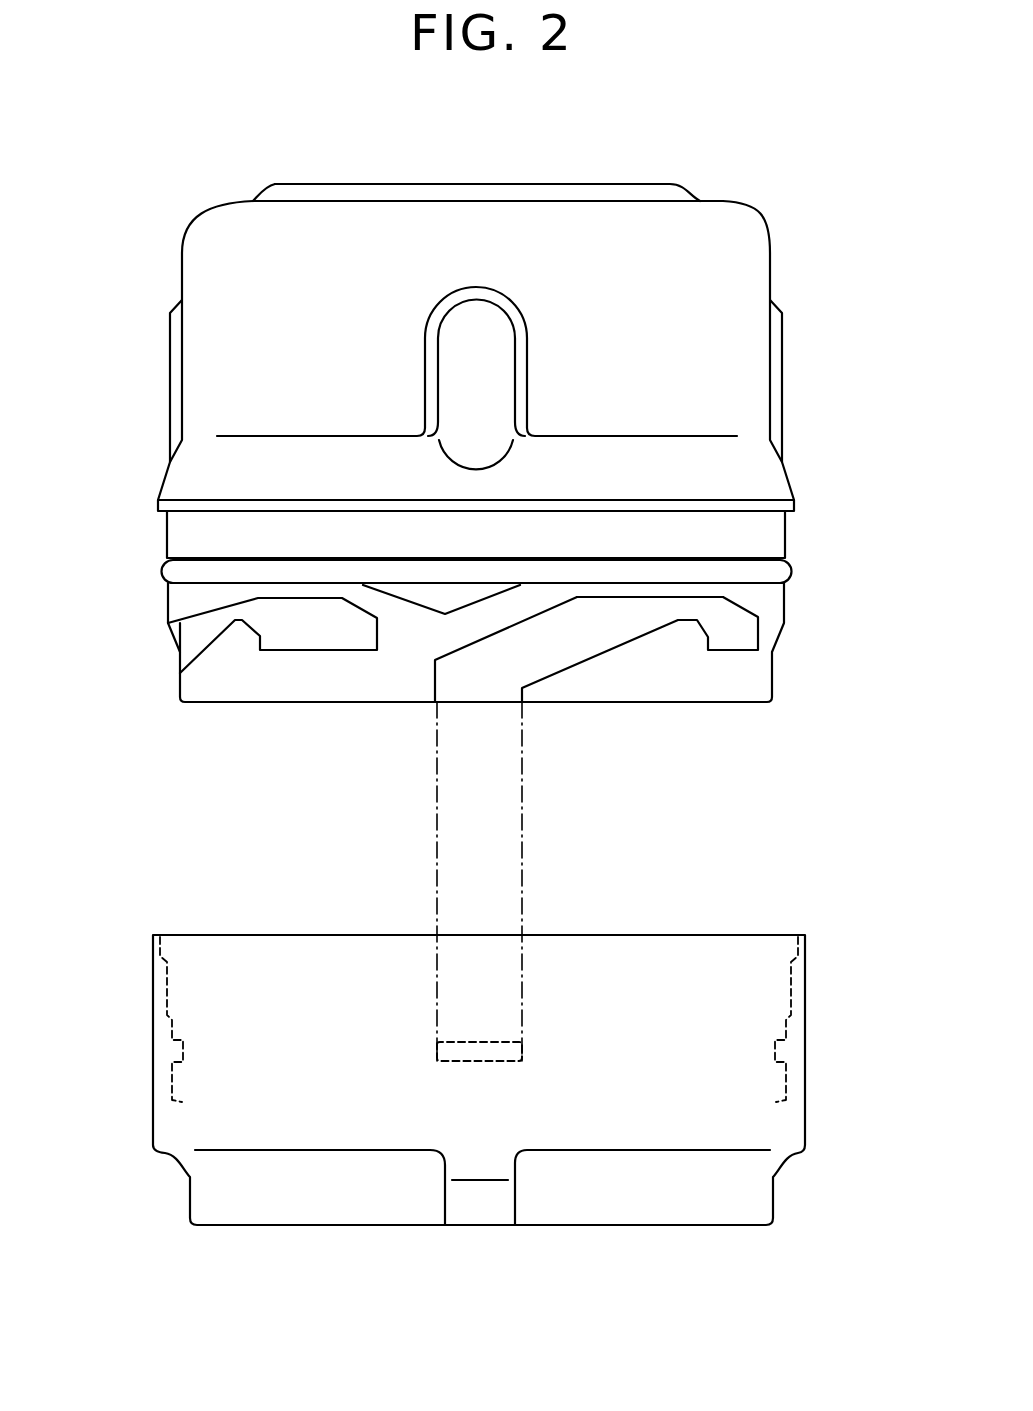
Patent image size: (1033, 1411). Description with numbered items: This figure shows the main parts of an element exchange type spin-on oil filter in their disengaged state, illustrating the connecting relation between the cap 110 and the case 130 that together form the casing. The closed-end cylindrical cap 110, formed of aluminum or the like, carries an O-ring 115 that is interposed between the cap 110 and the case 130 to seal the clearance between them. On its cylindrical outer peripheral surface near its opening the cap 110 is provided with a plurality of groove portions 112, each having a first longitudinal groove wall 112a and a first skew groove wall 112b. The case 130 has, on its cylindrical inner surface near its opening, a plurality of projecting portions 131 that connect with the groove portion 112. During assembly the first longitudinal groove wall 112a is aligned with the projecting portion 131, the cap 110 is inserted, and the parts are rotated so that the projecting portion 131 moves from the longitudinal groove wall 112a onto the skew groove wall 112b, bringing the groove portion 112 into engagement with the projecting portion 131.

The cap 110 is at (727, 230).
The O-ring 115 is at (793, 572).
The groove portion 112 is at (545, 658).
The first longitudinal groove wall 112a is at (522, 692).
The first skew groove wall 112b is at (605, 640).
The case 130 is at (308, 1043).
The projecting portion 131 is at (497, 1048).